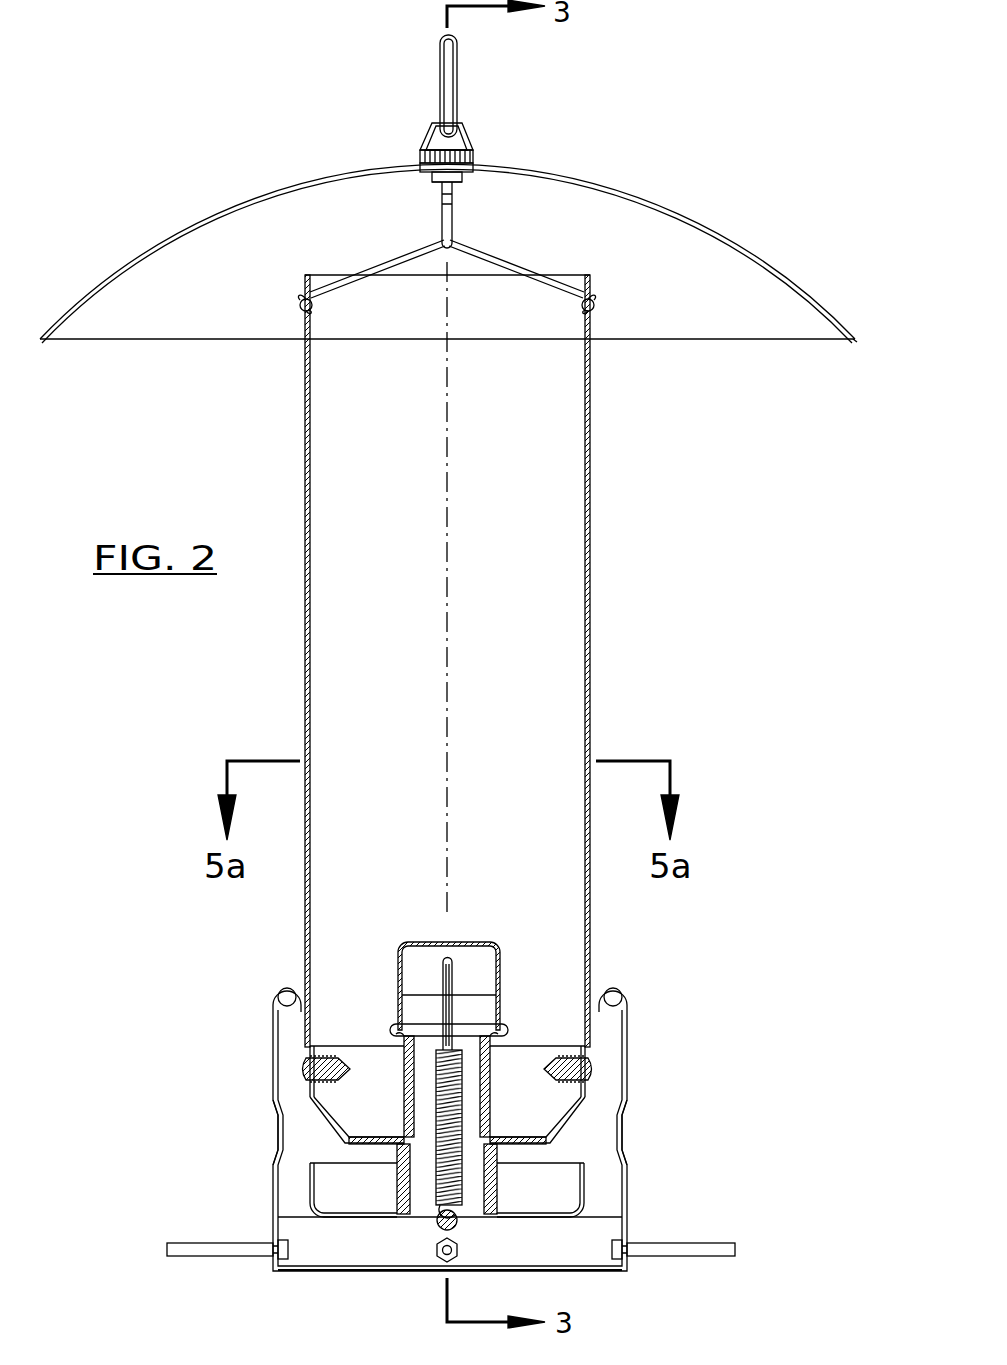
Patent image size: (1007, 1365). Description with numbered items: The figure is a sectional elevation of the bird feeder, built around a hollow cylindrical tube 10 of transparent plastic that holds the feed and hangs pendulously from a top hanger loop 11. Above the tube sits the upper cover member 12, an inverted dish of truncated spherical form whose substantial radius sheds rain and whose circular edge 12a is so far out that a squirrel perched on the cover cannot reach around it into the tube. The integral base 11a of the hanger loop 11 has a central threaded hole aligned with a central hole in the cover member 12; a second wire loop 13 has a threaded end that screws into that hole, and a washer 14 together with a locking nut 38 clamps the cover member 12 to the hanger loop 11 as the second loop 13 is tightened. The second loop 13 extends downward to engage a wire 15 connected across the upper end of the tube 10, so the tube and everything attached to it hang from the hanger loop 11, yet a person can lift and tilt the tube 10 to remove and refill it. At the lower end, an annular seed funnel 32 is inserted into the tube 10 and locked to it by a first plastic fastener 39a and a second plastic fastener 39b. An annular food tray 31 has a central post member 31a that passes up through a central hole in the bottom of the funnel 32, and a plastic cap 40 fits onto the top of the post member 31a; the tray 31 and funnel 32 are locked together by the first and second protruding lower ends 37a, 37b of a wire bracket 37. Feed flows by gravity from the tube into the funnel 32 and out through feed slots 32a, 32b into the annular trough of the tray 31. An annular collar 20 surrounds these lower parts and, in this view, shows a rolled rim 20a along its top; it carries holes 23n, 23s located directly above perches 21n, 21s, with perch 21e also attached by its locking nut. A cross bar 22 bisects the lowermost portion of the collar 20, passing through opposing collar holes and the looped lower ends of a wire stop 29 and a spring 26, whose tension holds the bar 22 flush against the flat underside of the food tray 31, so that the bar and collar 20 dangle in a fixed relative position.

The hollow cylindrical tube 10 is at (598, 592).
The top hanger loop 11 is at (470, 63).
The integral base of hanger loop 11a is at (420, 157).
The upper cover member 12 is at (700, 212).
The circular edge 12a is at (868, 353).
The second wire loop 13 is at (462, 207).
The washer 14 is at (490, 178).
The wire 15 is at (540, 252).
The annular collar 20 is at (632, 1025).
The tray rolled rim 20a is at (620, 990).
The perch 21n is at (177, 1265).
The perch 21s is at (663, 1266).
The perch 21e is at (462, 1258).
The cross bar 22 is at (447, 1215).
The hole 23n is at (268, 1128).
The hole 23s is at (633, 1128).
The spring 26 is at (428, 1200).
The wire stop 29 is at (445, 958).
The annular food tray 31 is at (600, 1200).
The central post member 31a is at (400, 1060).
The annular seed funnel 32 is at (322, 1126).
The feed slot 32a is at (398, 1195).
The feed slot 32b is at (590, 1180).
The wire bracket 37 is at (422, 1017).
The first protruding lower end 37a is at (350, 1112).
The second protruding lower end 37b is at (598, 1108).
The locking nut 38 is at (426, 192).
The first plastic fastener 39a is at (296, 1063).
The second plastic fastener 39b is at (605, 1062).
The plastic cap 40 is at (470, 934).